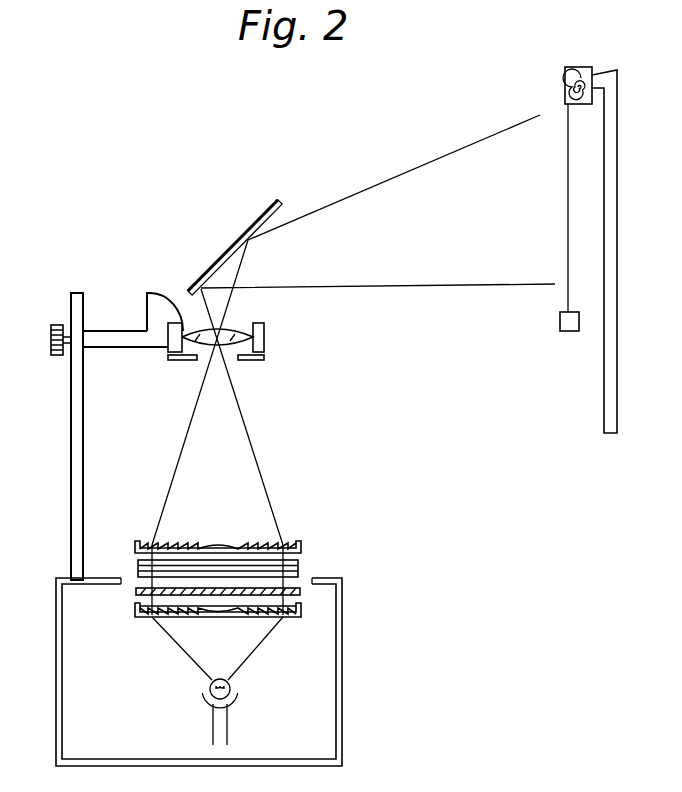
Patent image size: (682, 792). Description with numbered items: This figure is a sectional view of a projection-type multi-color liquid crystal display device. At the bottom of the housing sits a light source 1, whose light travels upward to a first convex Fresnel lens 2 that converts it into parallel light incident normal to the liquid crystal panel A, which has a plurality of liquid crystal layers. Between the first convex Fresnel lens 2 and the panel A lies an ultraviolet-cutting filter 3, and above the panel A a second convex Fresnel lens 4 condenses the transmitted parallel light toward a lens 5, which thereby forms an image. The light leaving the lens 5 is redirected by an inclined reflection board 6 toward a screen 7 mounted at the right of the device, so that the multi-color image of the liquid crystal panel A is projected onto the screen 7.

The light source 1 is at (205, 699).
The first convex Fresnel lens 2 is at (302, 603).
The ultraviolet-cutting filter 3 is at (137, 591).
The second convex Fresnel lens 4 is at (299, 542).
The lens 5 is at (240, 357).
The reflection board 6 is at (274, 204).
The screen 7 is at (566, 149).
The liquid crystal panel A is at (299, 566).